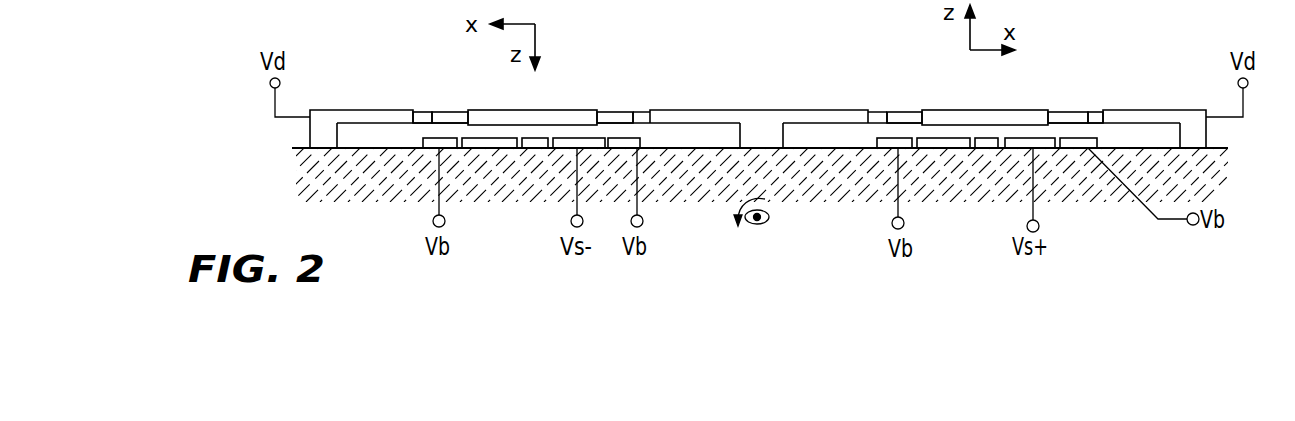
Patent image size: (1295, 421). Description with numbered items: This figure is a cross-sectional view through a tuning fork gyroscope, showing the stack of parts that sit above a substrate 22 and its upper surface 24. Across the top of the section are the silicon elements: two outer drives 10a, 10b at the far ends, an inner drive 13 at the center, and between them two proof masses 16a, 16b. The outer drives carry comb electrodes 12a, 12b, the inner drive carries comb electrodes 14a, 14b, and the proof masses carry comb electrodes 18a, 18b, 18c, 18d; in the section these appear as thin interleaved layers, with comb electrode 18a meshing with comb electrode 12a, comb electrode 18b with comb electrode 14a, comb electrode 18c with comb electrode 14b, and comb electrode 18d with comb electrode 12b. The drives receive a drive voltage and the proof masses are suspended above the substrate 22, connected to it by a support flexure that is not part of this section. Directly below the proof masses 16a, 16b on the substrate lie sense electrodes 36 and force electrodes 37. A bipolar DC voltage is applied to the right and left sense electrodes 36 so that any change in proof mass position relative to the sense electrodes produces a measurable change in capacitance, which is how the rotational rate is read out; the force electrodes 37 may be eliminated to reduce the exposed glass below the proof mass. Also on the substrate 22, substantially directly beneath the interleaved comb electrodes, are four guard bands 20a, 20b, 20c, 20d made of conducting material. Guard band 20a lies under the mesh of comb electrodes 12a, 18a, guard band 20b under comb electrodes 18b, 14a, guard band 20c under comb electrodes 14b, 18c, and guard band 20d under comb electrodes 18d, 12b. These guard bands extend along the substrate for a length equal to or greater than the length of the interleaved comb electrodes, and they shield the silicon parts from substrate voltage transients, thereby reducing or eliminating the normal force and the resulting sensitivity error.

The outer drive 10a is at (310, 130).
The outer drive 10b is at (1204, 129).
The comb electrode 12a is at (423, 110).
The comb electrode 12b is at (1096, 112).
The inner drive 13 is at (770, 138).
The comb electrode 14a is at (636, 110).
The comb electrode 14b is at (878, 110).
The proof mass 16a is at (541, 109).
The proof mass 16b is at (972, 110).
The comb electrode 18a is at (453, 110).
The comb electrode 18b is at (613, 110).
The comb electrode 18c is at (906, 110).
The comb electrode 18d is at (1069, 110).
The guard band 20a is at (428, 150).
The guard band 20b is at (615, 150).
The guard band 20c is at (887, 150).
The guard band 20d is at (1078, 148).
The substrate 22 is at (313, 177).
The upper surface 24 is at (292, 146).
The sense electrode 36 is at (473, 150).
The force electrode 37 is at (532, 150).